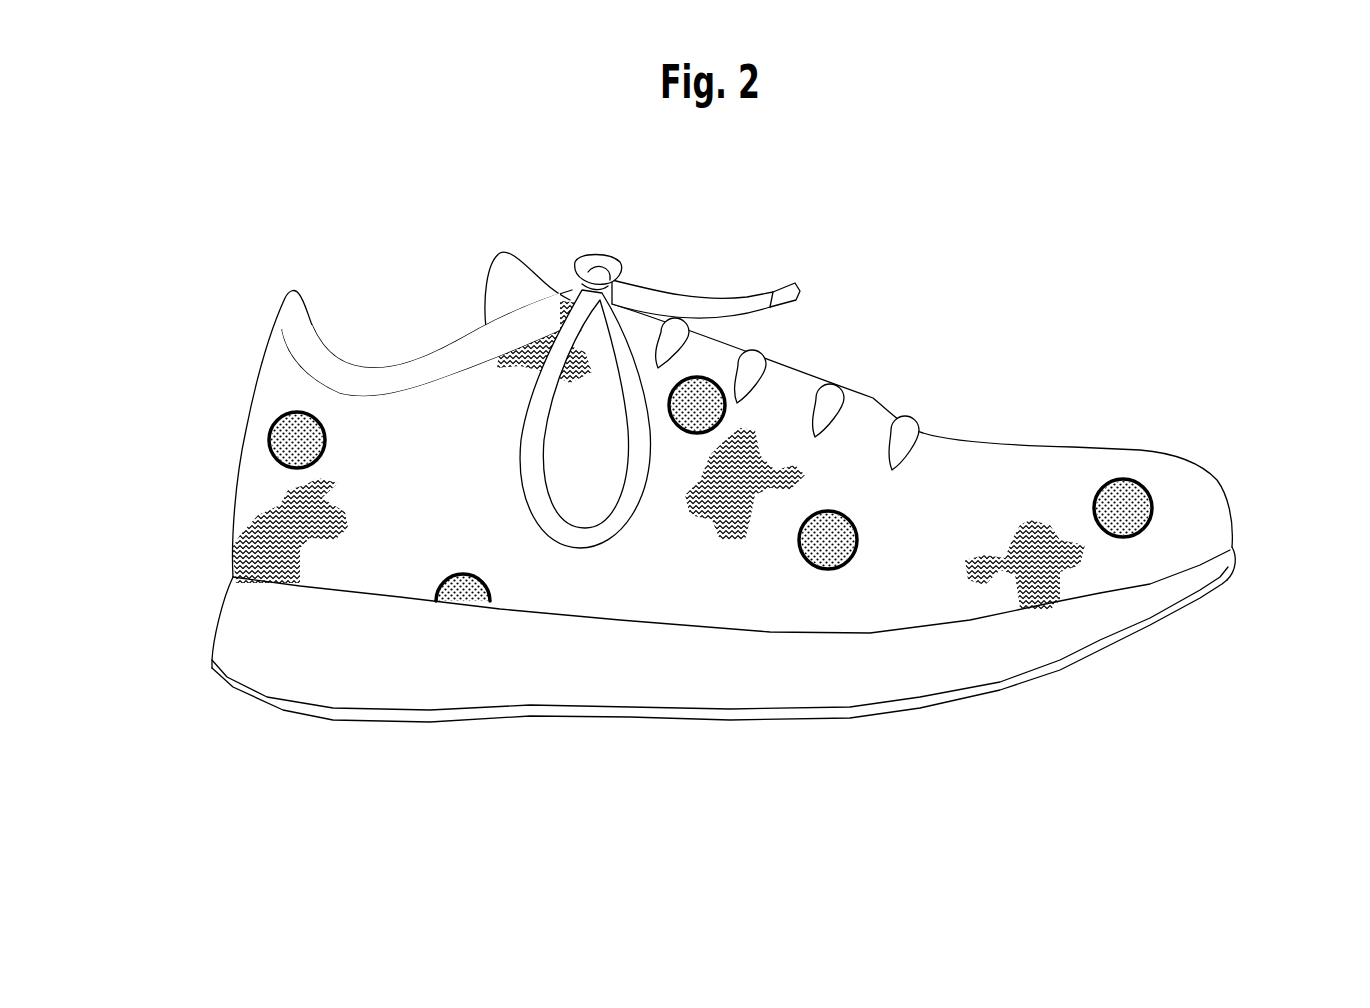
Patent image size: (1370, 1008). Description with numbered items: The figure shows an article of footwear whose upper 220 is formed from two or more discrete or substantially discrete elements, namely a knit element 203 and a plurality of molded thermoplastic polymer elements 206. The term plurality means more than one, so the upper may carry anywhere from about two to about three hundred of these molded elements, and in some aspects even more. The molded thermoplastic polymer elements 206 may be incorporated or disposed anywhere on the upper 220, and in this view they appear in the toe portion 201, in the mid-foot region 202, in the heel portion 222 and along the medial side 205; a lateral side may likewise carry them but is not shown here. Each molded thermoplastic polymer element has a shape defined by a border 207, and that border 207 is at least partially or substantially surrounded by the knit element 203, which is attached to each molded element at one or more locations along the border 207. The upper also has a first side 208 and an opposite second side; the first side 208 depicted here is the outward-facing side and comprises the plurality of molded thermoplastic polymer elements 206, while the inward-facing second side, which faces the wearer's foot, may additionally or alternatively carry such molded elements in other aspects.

The toe portion 201 is at (719, 528).
The mid-foot region 202 is at (723, 706).
The knit element 203 is at (757, 457).
The medial side 205 is at (696, 414).
The molded thermoplastic polymer elements 206 is at (270, 442).
The border 207 is at (297, 412).
The first side 208 is at (870, 747).
The upper 220 is at (1207, 423).
The heel portion 222 is at (227, 471).